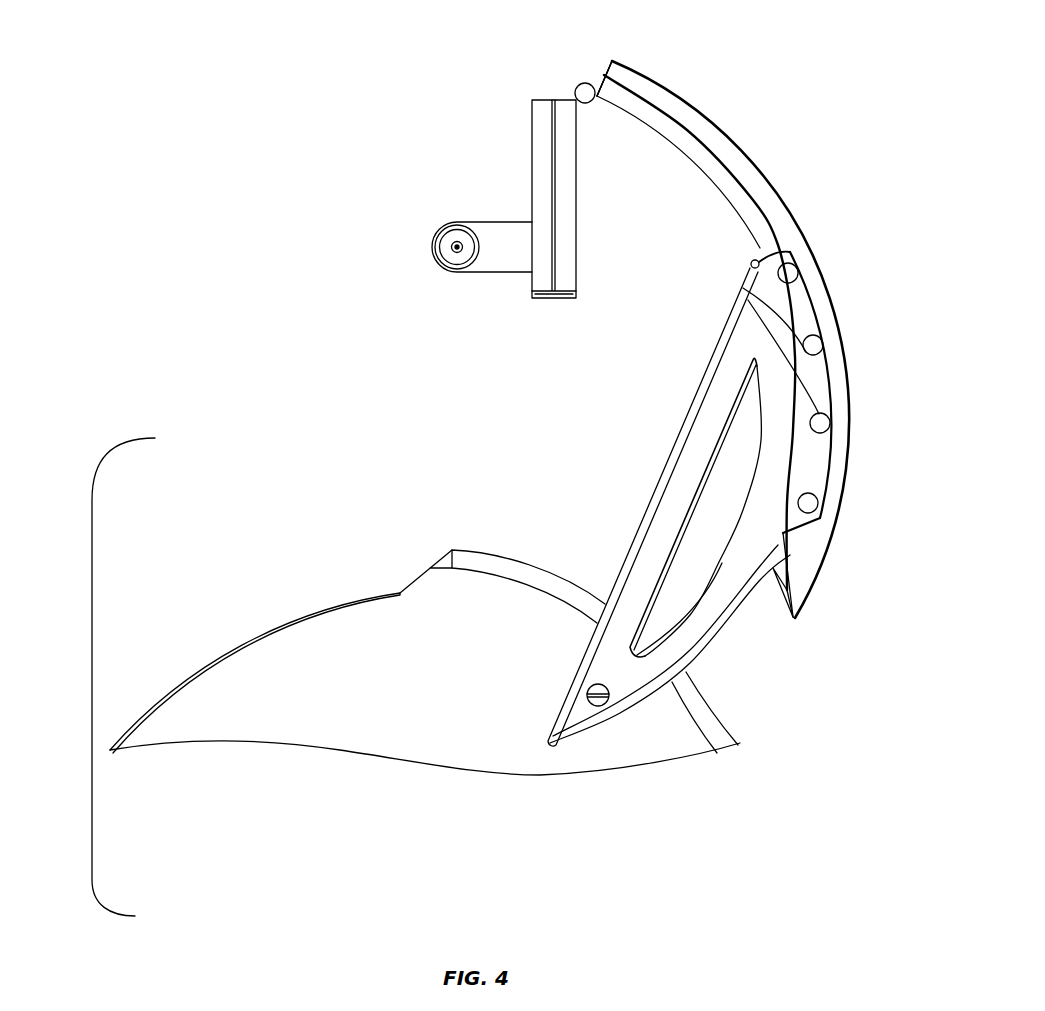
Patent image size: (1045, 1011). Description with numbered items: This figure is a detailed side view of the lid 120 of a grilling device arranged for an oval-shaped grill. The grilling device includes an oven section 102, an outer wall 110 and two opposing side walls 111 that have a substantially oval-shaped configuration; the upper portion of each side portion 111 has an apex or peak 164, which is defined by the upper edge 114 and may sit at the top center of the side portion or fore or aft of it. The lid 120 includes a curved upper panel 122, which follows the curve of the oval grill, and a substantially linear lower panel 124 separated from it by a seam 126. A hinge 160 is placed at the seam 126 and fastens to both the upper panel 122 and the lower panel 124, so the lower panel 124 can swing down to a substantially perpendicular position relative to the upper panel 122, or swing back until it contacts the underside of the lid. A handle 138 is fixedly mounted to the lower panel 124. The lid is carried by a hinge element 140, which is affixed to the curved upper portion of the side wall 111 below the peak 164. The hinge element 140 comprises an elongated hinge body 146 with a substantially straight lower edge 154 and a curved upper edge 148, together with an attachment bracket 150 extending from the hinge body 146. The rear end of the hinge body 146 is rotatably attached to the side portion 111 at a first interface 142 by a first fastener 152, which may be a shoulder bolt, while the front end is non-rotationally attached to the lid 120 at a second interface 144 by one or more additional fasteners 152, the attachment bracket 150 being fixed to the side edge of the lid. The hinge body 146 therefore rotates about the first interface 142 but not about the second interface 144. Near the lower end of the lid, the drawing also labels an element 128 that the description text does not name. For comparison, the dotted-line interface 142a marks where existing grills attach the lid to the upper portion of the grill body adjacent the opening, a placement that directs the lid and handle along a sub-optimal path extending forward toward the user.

The oven section 102 is at (92, 750).
The outer wall 110 is at (780, 735).
The side portion 111 is at (355, 634).
The upper edge 114 is at (452, 550).
The lid 120 is at (820, 212).
The upper panel 122 is at (755, 163).
The lower panel 124 is at (532, 150).
The seam 126 is at (583, 55).
The track lower end 128 is at (793, 617).
The handle 138 is at (435, 247).
The hinge element 140 is at (858, 465).
The first interface 142 is at (652, 710).
The interface 142a is at (450, 477).
The second interface 144 is at (793, 553).
The hinge body 146 is at (672, 505).
The upper edge 148 is at (723, 640).
The attachment bracket 150 is at (812, 318).
The fastener 152 is at (756, 262).
The lower edge 154 is at (698, 387).
The hinge 160 is at (598, 112).
The peak 164 is at (452, 548).